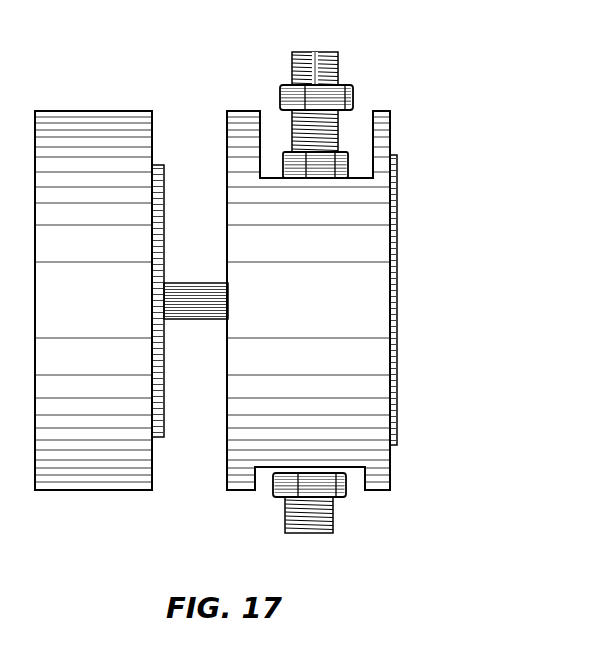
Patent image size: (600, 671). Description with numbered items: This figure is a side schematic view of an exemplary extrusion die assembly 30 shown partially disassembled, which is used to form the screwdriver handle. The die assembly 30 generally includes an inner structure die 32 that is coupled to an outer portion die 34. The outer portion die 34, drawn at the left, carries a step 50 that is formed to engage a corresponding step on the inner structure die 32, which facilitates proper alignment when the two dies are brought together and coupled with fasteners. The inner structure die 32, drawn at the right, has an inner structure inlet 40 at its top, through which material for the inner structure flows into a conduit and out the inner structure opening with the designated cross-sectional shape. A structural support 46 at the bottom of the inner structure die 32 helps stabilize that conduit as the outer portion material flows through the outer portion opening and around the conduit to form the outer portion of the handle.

The die assembly 30 is at (466, 64).
The inner structure die 32 is at (397, 232).
The outer portion die 34 is at (93, 111).
The inner structure inlet 40 is at (330, 50).
The structural support 46 is at (323, 532).
The step 50 is at (162, 440).